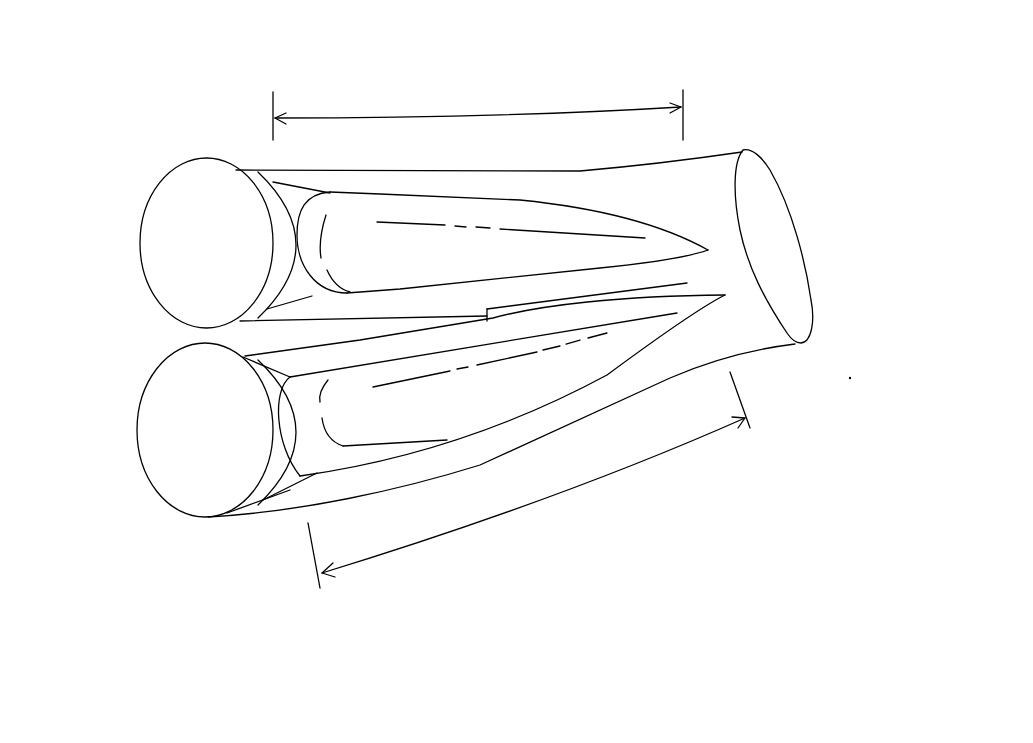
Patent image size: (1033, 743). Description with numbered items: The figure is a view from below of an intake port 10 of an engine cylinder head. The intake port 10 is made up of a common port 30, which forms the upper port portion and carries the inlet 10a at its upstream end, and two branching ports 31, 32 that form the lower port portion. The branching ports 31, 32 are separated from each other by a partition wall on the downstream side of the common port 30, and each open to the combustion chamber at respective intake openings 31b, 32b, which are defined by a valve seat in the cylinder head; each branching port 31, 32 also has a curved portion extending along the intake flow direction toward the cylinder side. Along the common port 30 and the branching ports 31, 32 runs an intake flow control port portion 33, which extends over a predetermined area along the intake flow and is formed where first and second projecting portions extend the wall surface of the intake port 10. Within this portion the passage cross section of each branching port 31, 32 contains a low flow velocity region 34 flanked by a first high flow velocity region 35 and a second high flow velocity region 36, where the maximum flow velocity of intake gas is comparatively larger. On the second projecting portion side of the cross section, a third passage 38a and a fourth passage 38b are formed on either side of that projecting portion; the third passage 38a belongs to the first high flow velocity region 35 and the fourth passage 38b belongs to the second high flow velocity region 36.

The intake port 10 is at (211, 118).
The inlet 10a is at (763, 203).
The common port 30 is at (767, 332).
The first branching port 31 is at (361, 224).
The intake opening of first branching port 31b is at (158, 215).
The second branching port 32 is at (357, 436).
The intake opening of second branching port 32b is at (152, 432).
The intake flow control port portion 33 is at (477, 117).
The low flow velocity region 34 is at (422, 245).
The first high flow velocity region 35 is at (419, 182).
The second high flow velocity region 36 is at (433, 297).
The third passage 38a is at (499, 322).
The fourth passage 38b is at (512, 299).